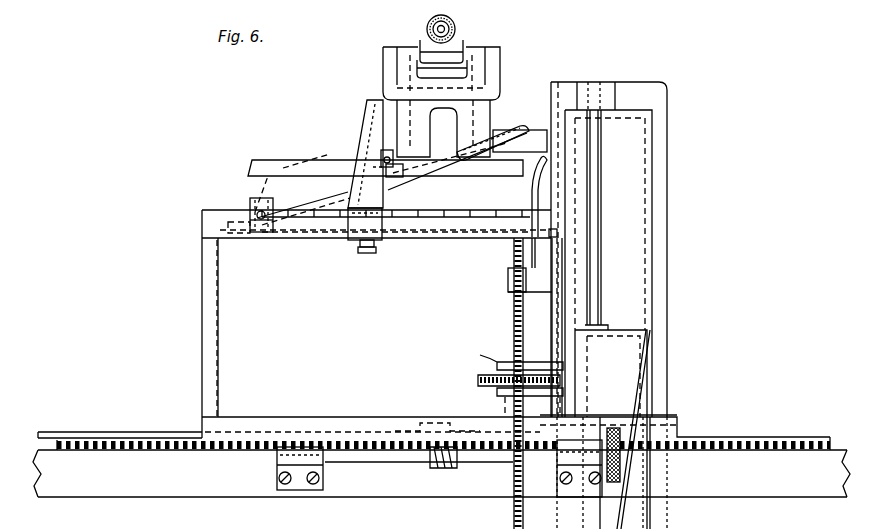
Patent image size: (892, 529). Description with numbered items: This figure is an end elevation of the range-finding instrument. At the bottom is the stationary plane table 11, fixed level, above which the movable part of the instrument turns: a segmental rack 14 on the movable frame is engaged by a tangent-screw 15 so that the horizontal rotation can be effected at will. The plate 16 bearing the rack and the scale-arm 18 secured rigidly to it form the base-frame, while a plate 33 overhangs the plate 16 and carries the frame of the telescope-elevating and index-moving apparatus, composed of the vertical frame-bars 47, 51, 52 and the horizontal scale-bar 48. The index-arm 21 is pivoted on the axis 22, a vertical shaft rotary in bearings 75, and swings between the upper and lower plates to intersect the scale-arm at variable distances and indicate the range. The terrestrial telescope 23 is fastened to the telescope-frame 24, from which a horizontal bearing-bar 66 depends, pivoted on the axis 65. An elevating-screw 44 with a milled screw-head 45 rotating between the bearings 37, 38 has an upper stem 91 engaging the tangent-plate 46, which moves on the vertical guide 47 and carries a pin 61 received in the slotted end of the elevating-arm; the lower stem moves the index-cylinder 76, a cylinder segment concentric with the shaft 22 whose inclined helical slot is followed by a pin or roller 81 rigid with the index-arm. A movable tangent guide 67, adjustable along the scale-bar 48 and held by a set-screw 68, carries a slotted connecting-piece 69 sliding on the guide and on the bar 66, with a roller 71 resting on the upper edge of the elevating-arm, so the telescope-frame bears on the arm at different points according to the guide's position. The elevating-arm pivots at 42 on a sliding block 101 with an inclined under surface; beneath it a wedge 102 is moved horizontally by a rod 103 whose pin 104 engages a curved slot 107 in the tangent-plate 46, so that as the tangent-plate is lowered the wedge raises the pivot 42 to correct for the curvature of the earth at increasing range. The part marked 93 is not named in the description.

The plane table 11 is at (441, 473).
The segmental rack 14 is at (210, 452).
The tangent-screw 15 is at (445, 470).
The plate 16 is at (725, 440).
The scale-arm 18 is at (431, 423).
The index-arm 21 is at (100, 432).
The axis 22 is at (603, 246).
The terrestrial telescope 23 is at (449, 26).
The telescope-frame 24 is at (478, 47).
The plate 33 is at (516, 426).
The bearing 37 is at (497, 365).
The bearing 38 is at (497, 393).
The pivot 42 is at (250, 214).
The elevating-screw 44 is at (513, 336).
The milled screw-head 45 is at (505, 376).
The tangent-plate 46 is at (583, 194).
The vertical frame-bar 47 is at (535, 327).
The horizontal scale-bar 48 is at (428, 238).
The vertical frame-bar 51 is at (667, 308).
The vertical frame-bar 52 is at (202, 304).
The pin 61 is at (505, 132).
The axis 65 is at (397, 65).
The horizontal bearing-bar 66 is at (322, 160).
The movable tangent guide 67 is at (404, 190).
The set-screw 68 is at (366, 253).
The slotted connecting-piece 69 is at (380, 156).
The roller 71 is at (394, 163).
The bearing 75 is at (606, 88).
The index-cylinder 76 is at (611, 373).
The pin or roller 81 is at (640, 432).
The upper screw-threaded stem 91 is at (308, 190).
The bracket 93 is at (527, 130).
The sliding block 101 is at (262, 200).
The wedge 102 is at (238, 236).
The rod 103 is at (472, 238).
The pin 104 is at (557, 232).
The curved slot 107 is at (530, 183).